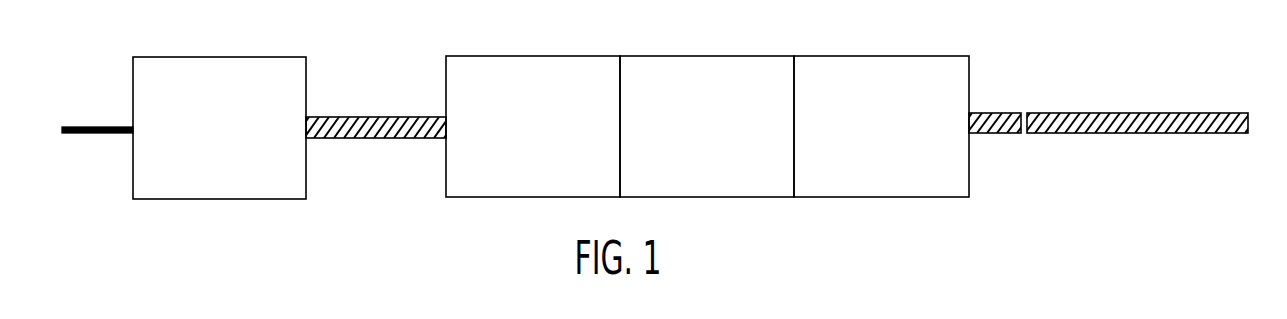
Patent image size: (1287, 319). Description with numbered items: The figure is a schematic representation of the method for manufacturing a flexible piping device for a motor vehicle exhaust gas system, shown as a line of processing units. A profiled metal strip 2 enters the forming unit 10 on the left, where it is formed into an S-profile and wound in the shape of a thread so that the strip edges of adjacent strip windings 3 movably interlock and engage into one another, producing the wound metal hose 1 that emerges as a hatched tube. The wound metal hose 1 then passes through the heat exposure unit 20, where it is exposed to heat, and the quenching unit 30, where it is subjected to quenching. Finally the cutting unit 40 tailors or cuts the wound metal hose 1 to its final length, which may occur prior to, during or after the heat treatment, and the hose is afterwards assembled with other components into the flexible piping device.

The wound metal hose 1 is at (389, 96).
The profiled metal strip 2 is at (80, 126).
The strip windings 3 is at (329, 117).
The forming unit 10 is at (264, 97).
The heat exposure unit 20 is at (576, 95).
The quenching unit 30 is at (751, 94).
The cutting unit 40 is at (924, 94).